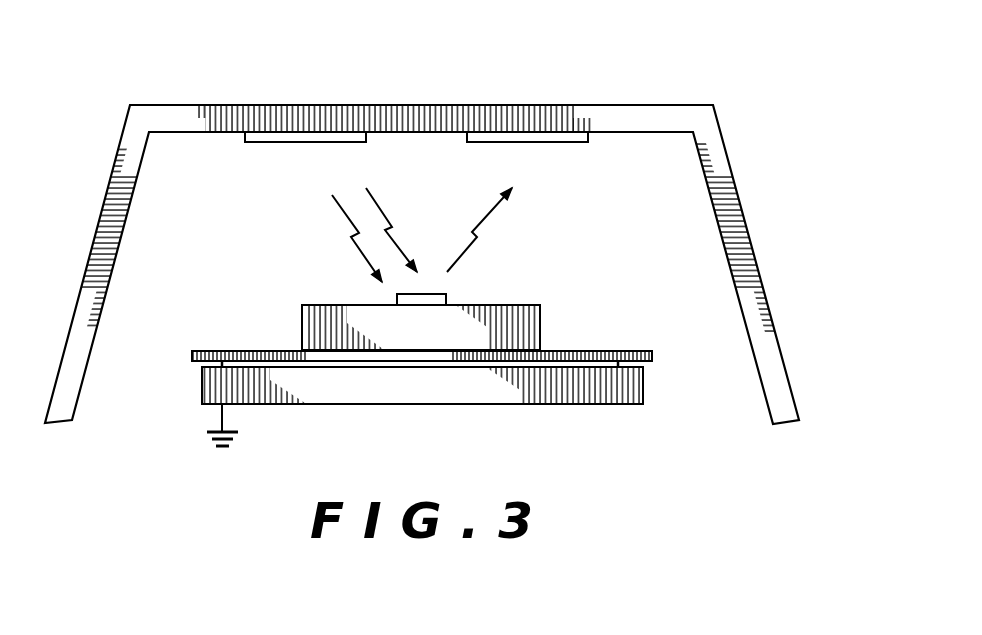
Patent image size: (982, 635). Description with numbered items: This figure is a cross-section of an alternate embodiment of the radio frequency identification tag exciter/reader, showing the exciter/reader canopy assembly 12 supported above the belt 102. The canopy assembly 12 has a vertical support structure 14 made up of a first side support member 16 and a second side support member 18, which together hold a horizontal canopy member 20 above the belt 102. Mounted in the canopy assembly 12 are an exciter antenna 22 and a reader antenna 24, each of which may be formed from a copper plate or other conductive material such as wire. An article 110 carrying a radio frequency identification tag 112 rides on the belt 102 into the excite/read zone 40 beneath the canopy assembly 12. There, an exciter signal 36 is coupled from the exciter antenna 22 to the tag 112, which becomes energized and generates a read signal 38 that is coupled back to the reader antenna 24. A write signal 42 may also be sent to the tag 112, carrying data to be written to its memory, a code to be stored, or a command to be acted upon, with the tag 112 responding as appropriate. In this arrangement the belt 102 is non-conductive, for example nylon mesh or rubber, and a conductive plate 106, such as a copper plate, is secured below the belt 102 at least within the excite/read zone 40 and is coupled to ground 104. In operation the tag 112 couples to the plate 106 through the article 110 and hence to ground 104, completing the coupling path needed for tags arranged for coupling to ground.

The exciter/reader canopy assembly 12 is at (653, 92).
The vertical support structure 14 is at (790, 291).
The first side support member 16 is at (735, 216).
The second side support member 18 is at (102, 238).
The horizontal canopy member 20 is at (435, 114).
The exciter antenna 22 is at (282, 143).
The reader antenna 24 is at (556, 143).
The exciter signal 36 is at (342, 226).
The read signal 38 is at (494, 220).
The excite/read zone 40 is at (456, 197).
The write signal 42 is at (377, 207).
The belt 102 is at (249, 356).
The ground 104 is at (233, 444).
The conductive plate 106 is at (623, 391).
The article 110 is at (523, 327).
The radio frequency identification tag 112 is at (441, 293).